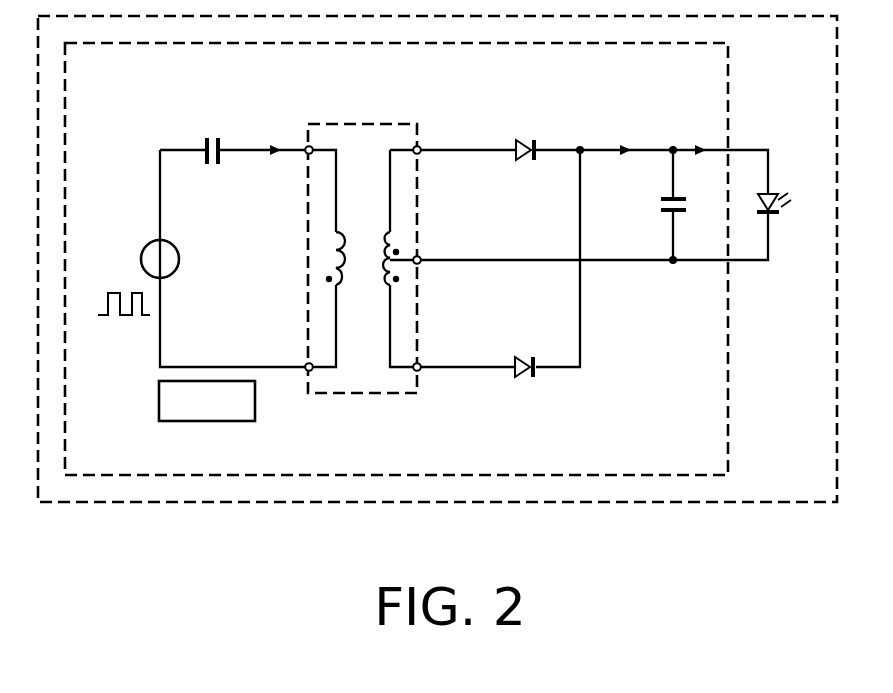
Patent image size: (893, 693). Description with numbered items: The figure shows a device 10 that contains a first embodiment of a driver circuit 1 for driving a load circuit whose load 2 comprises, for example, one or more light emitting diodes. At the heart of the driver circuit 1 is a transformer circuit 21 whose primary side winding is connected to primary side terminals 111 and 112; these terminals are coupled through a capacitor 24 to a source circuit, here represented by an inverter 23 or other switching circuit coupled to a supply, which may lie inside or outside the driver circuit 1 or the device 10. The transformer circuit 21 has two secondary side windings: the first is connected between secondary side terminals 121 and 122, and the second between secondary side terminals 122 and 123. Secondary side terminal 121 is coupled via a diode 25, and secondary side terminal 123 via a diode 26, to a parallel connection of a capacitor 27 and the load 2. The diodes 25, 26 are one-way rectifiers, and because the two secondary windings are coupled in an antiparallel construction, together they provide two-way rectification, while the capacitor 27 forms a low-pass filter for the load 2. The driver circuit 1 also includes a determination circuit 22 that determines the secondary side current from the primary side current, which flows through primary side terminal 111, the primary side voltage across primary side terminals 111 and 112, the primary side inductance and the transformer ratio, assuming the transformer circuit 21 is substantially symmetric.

The driver circuit 1 is at (653, 475).
The device 10 is at (758, 502).
The load 2 is at (778, 192).
The transformer circuit 21 is at (372, 124).
The determination circuit 22 is at (159, 400).
The inverter 23 is at (180, 259).
The capacitor 24 is at (215, 137).
The diode 25 is at (526, 139).
The diode 26 is at (523, 379).
The capacitor 27 is at (661, 204).
The primary side terminal 111 is at (306, 147).
The primary side terminal 112 is at (306, 364).
The secondary side terminal 121 is at (420, 147).
The secondary side terminal 122 is at (420, 257).
The secondary side terminal 123 is at (420, 364).